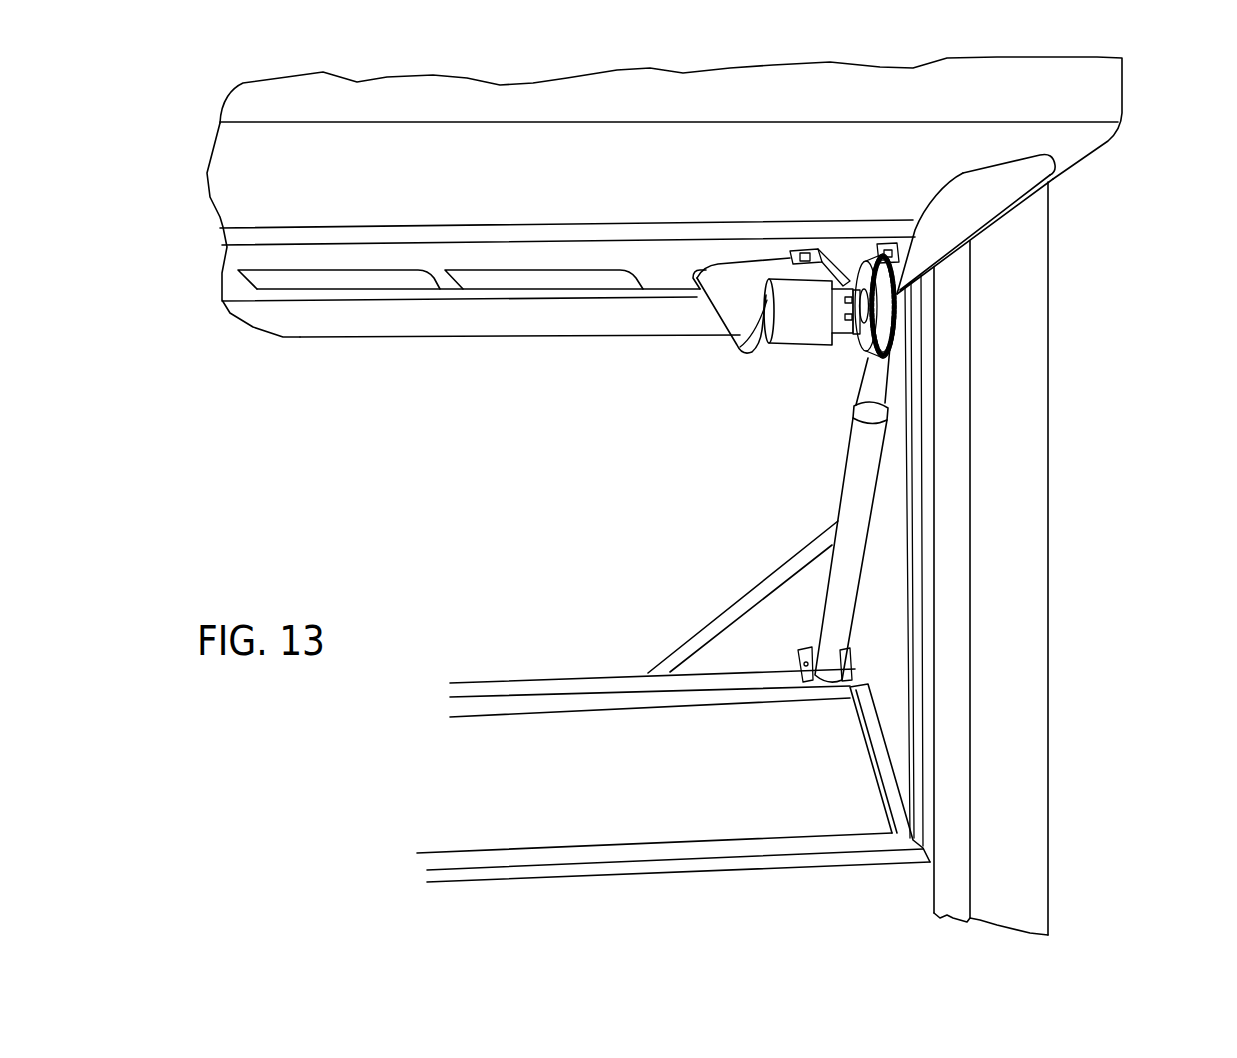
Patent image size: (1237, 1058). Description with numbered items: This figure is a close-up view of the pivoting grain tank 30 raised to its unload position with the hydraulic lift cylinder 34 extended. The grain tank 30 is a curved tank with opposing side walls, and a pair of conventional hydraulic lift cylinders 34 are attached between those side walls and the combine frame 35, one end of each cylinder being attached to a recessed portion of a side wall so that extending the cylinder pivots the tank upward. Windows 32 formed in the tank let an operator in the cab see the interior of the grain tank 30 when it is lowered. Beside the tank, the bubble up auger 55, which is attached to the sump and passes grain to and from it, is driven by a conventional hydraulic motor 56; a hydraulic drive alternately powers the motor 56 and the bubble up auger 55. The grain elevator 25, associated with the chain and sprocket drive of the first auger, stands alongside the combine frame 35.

The pivoting grain tank 30 is at (1107, 92).
The windows 32 is at (505, 277).
The grain elevator 25 is at (1027, 243).
The hydraulic lift cylinder 34 is at (867, 453).
The combine frame 35 is at (828, 693).
The bubble up auger 55 is at (727, 307).
The hydraulic motor 56 is at (798, 320).